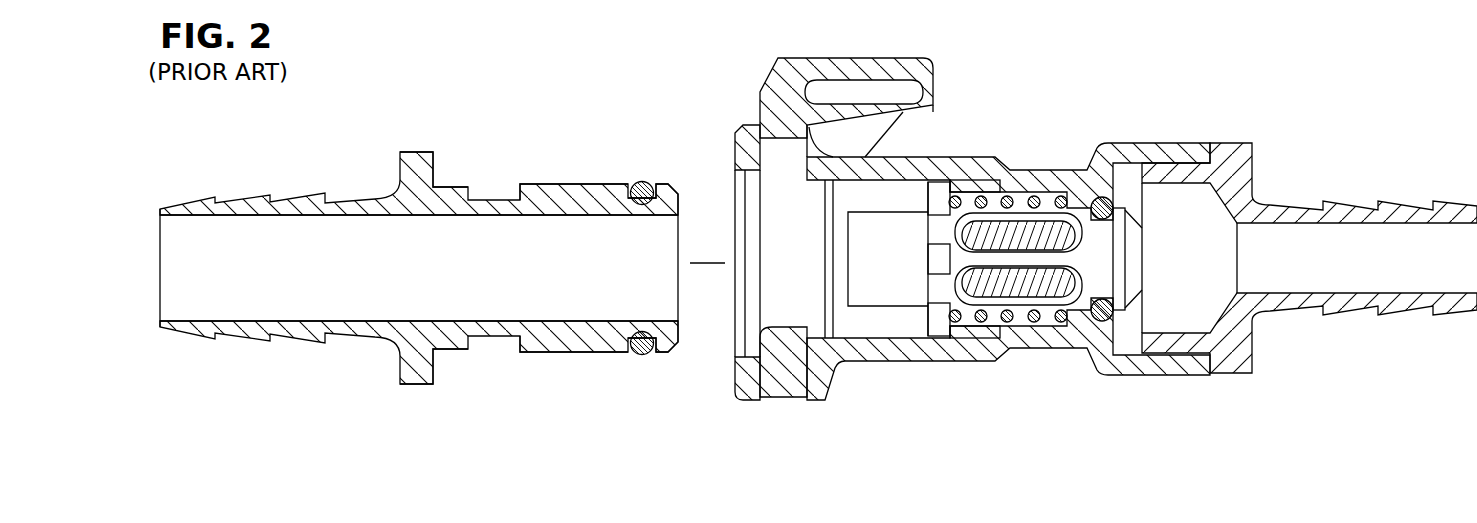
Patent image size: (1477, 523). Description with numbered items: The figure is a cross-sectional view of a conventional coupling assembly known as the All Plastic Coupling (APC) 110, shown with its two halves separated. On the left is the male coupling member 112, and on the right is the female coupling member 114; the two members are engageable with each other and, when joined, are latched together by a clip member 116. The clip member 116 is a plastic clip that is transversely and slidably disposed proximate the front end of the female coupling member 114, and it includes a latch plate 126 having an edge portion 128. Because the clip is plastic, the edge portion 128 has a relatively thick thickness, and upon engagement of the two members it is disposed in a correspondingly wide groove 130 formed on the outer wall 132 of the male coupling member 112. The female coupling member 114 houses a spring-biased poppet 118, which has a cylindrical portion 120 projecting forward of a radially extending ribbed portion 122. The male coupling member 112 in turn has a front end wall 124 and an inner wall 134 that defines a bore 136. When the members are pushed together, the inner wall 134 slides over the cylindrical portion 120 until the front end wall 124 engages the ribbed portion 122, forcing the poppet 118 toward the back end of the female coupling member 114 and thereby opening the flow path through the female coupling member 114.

The All Plastic Coupling assembly 110 is at (645, 95).
The male coupling member 112 is at (243, 193).
The female coupling member 114 is at (1160, 137).
The clip member 116 is at (768, 63).
The spring-biased poppet 118 is at (1078, 307).
The cylindrical portion 120 is at (888, 268).
The ribbed portion 122 is at (935, 198).
The front end wall 124 is at (680, 195).
The latch plate 126 is at (778, 107).
The edge portion 128 is at (785, 330).
The groove 130 is at (488, 192).
The outer wall 132 is at (573, 183).
The inner wall 134 is at (590, 213).
The bore 136 is at (462, 281).